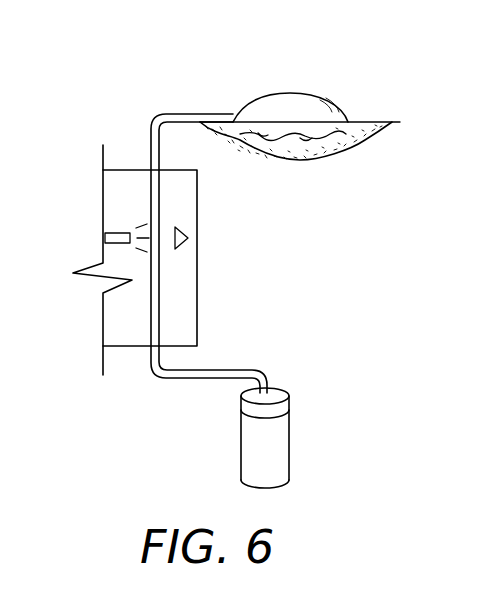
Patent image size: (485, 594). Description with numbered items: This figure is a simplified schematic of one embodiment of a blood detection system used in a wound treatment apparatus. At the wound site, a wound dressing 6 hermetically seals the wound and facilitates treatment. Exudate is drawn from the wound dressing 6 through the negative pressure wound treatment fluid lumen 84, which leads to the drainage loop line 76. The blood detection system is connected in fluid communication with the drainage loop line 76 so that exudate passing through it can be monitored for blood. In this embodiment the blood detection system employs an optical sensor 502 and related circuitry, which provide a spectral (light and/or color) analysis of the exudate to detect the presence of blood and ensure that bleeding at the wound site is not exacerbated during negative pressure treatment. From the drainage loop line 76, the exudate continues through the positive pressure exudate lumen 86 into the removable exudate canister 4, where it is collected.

The negative pressure wound treatment fluid lumen 84 is at (183, 113).
The positive pressure exudate lumen 86 is at (226, 370).
The drainage loop line 76 is at (160, 296).
The optical sensor 502 is at (123, 232).
The wound dressing 6 is at (334, 103).
The exudate canister 4 is at (291, 447).